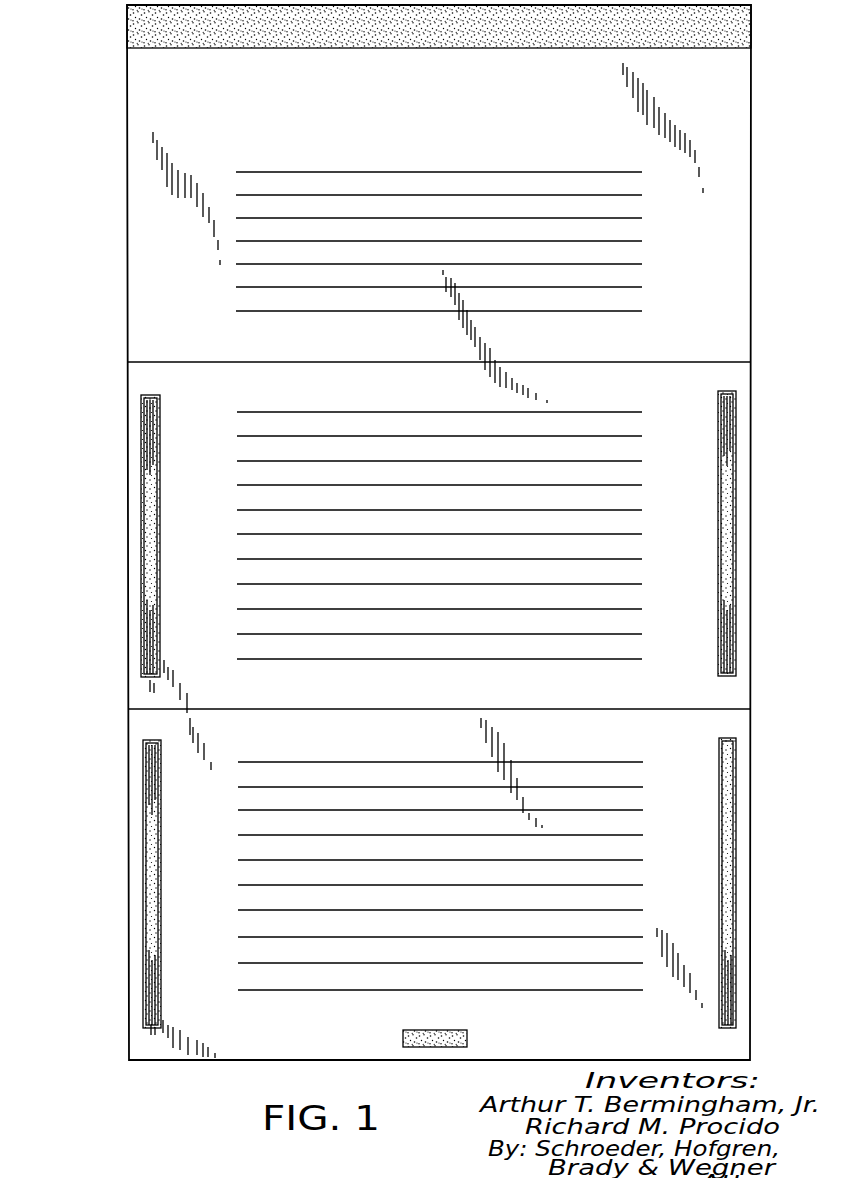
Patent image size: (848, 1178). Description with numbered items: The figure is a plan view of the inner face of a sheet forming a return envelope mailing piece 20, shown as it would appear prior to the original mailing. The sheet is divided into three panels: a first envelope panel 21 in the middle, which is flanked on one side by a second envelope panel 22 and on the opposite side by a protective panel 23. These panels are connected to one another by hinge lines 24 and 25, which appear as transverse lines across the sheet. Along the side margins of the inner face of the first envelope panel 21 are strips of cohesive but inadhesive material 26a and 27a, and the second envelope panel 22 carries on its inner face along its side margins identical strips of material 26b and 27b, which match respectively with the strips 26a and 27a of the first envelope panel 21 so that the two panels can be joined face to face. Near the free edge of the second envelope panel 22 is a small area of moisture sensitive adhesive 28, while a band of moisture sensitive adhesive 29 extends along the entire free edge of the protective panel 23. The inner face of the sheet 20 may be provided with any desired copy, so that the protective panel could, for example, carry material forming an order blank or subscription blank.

The return envelope mailing piece 20 is at (122, 82).
The band of moisture sensitive adhesive 29 is at (569, 29).
The protective panel 23 is at (127, 212).
The hinge line 25 is at (127, 363).
The first envelope panel 21 is at (131, 539).
The strip of cohesive but inadhesive material 26a is at (146, 437).
The strip of cohesive but inadhesive material 27a is at (728, 452).
The hinge line 24 is at (128, 709).
The second envelope panel 22 is at (136, 804).
The strip of cohesive but inadhesive material 26b is at (148, 853).
The strip of cohesive but inadhesive material 27b is at (728, 856).
The small area of moisture sensitive adhesive 28 is at (403, 1036).